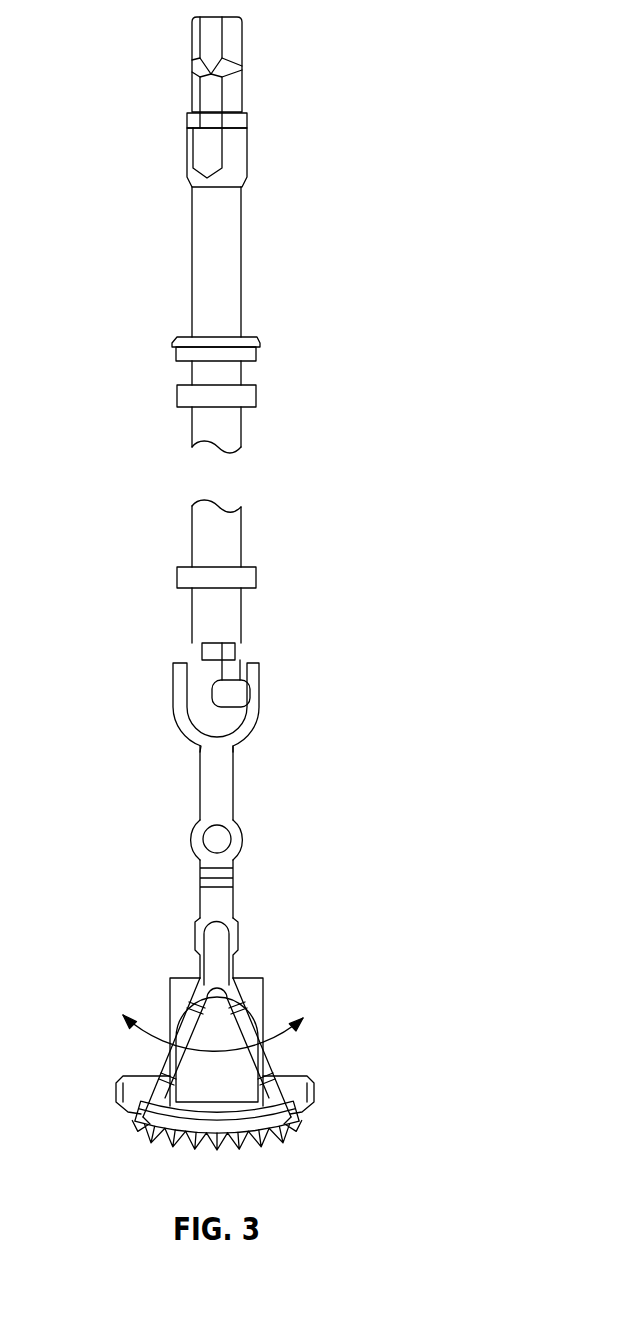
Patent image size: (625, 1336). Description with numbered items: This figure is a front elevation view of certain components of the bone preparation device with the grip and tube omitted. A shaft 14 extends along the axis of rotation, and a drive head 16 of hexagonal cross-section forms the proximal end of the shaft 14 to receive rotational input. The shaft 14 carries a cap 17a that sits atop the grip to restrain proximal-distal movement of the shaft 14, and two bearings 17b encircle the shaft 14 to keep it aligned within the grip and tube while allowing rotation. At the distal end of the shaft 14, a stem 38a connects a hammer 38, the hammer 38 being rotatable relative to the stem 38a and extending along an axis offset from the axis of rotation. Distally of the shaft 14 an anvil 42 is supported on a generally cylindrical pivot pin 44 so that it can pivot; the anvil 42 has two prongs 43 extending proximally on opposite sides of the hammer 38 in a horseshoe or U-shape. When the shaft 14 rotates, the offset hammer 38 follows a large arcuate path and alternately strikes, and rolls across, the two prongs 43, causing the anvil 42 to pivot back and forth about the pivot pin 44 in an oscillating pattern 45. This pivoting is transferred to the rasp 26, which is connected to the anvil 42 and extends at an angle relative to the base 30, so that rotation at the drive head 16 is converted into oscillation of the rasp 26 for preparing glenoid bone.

The drive head 16 is at (242, 43).
The shaft 14 is at (192, 233).
The cap 17a is at (260, 347).
The bearings 17b is at (256, 395).
The stem 38a is at (242, 653).
The hammer 38 is at (250, 690).
The prongs 43 is at (173, 687).
The anvil 42 is at (200, 792).
The pivot pin 44 is at (196, 834).
The oscillating pattern 45 is at (275, 1043).
The base 30 is at (120, 1093).
The rasp 26 is at (298, 1132).